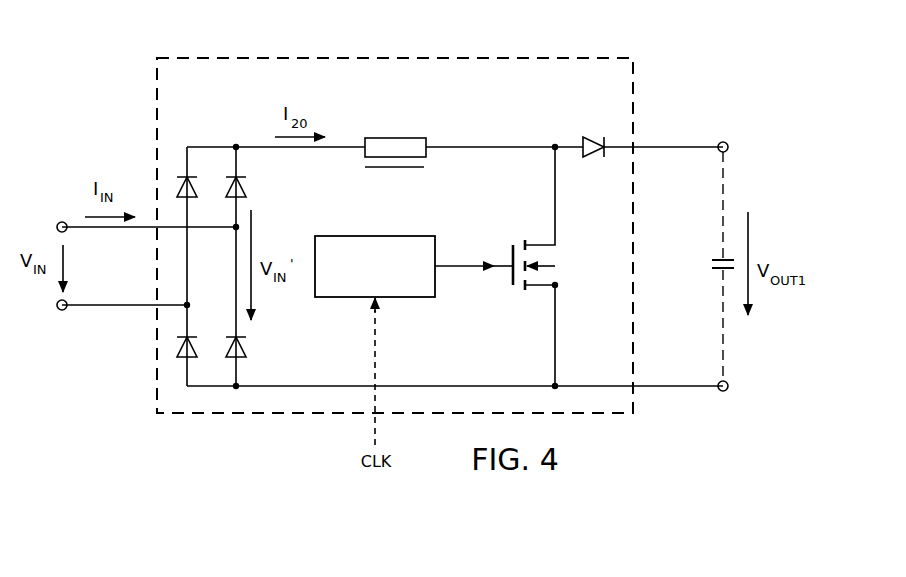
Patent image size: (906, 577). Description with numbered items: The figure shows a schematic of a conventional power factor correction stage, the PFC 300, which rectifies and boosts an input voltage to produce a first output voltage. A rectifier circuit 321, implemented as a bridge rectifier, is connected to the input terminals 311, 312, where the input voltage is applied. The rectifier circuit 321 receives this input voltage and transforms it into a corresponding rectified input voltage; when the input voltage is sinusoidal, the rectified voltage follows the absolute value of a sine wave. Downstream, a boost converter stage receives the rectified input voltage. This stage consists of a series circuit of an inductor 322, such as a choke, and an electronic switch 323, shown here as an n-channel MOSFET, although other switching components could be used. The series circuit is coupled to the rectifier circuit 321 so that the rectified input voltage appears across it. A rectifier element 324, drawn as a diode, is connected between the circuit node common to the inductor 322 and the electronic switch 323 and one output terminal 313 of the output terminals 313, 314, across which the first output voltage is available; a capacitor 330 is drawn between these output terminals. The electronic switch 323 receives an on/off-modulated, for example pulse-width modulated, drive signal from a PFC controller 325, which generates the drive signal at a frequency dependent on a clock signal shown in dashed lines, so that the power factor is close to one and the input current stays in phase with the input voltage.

The PFC 300 is at (466, 56).
The input terminal 311 is at (60, 221).
The input terminal 312 is at (60, 311).
The output terminal 313 is at (728, 142).
The output terminal 314 is at (728, 391).
The rectifier circuit 321 is at (210, 136).
The inductor 322 is at (392, 137).
The electronic switch 323 is at (512, 277).
The rectifier element 324 is at (598, 138).
The PFC controller 325 is at (366, 235).
The output capacitor 330 is at (712, 264).